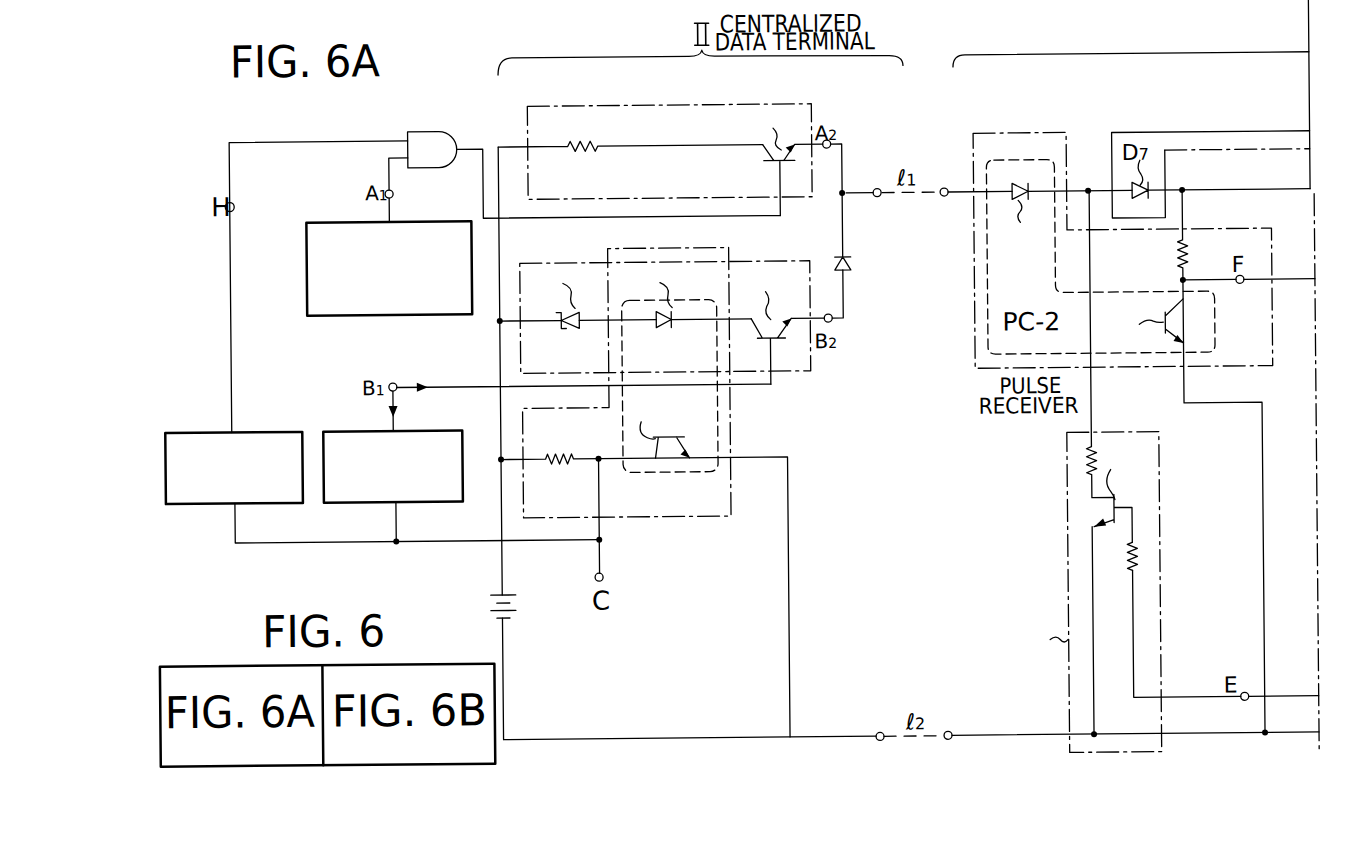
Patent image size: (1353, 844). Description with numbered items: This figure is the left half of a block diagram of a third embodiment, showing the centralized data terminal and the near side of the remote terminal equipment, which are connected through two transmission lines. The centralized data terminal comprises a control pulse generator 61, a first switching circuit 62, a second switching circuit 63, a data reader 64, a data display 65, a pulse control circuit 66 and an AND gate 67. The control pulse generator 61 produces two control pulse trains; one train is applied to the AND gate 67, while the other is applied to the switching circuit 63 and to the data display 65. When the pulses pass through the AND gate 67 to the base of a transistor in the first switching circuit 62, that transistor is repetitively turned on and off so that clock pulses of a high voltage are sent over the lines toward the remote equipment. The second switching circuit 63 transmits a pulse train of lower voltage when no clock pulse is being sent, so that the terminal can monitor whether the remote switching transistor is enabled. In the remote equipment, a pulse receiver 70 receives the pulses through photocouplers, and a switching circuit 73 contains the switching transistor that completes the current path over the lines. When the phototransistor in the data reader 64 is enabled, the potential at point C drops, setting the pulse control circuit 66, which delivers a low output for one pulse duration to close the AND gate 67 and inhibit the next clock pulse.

The control pulse generator 61 is at (308, 257).
The switching circuit 62 is at (816, 113).
The switching circuit 63 is at (813, 355).
The data reader 64 is at (733, 489).
The data display 65 is at (342, 427).
The pulse control circuit 66 is at (265, 426).
The AND gate 67 is at (450, 129).
The pulse receiver 70 is at (975, 351).
The switching circuit 73 is at (1066, 700).